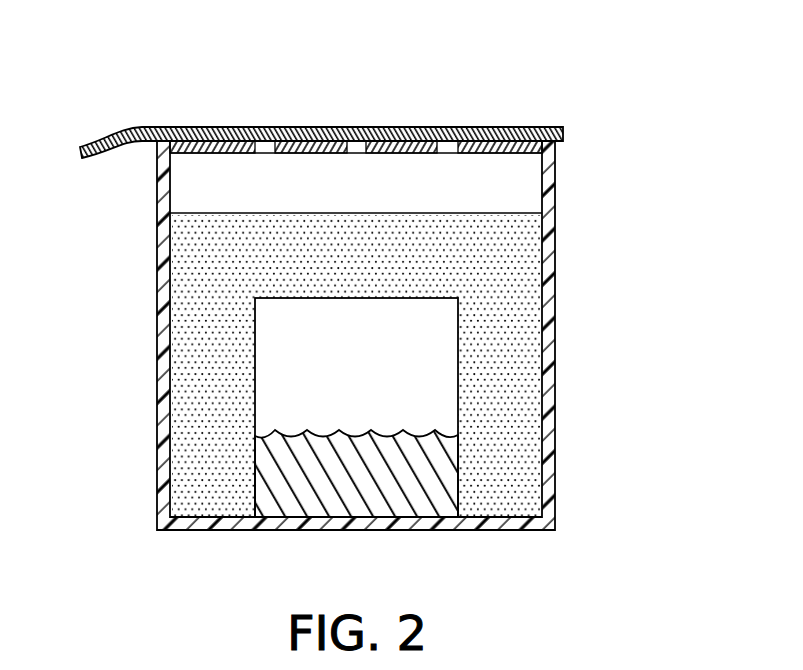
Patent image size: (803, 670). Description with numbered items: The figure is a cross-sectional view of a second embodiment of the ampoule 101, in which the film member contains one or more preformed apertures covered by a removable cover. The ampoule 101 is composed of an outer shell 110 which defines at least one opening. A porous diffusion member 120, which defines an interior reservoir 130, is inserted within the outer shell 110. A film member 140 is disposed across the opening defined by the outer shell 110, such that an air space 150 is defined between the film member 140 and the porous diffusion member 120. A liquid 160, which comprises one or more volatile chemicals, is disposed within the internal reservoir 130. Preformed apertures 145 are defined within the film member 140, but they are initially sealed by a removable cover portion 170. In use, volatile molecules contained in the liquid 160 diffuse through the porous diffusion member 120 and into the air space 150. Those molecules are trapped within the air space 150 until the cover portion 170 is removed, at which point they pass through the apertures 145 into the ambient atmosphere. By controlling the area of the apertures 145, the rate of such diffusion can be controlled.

The ampoule 101 is at (385, 301).
The outer shell 110 is at (555, 313).
The porous diffusion member 120 is at (222, 274).
The interior reservoir 130 is at (312, 375).
The film member 140 is at (503, 143).
The preformed apertures 145 is at (447, 153).
The air space 150 is at (473, 200).
The liquid 160 is at (378, 480).
The removable cover portion 170 is at (141, 128).